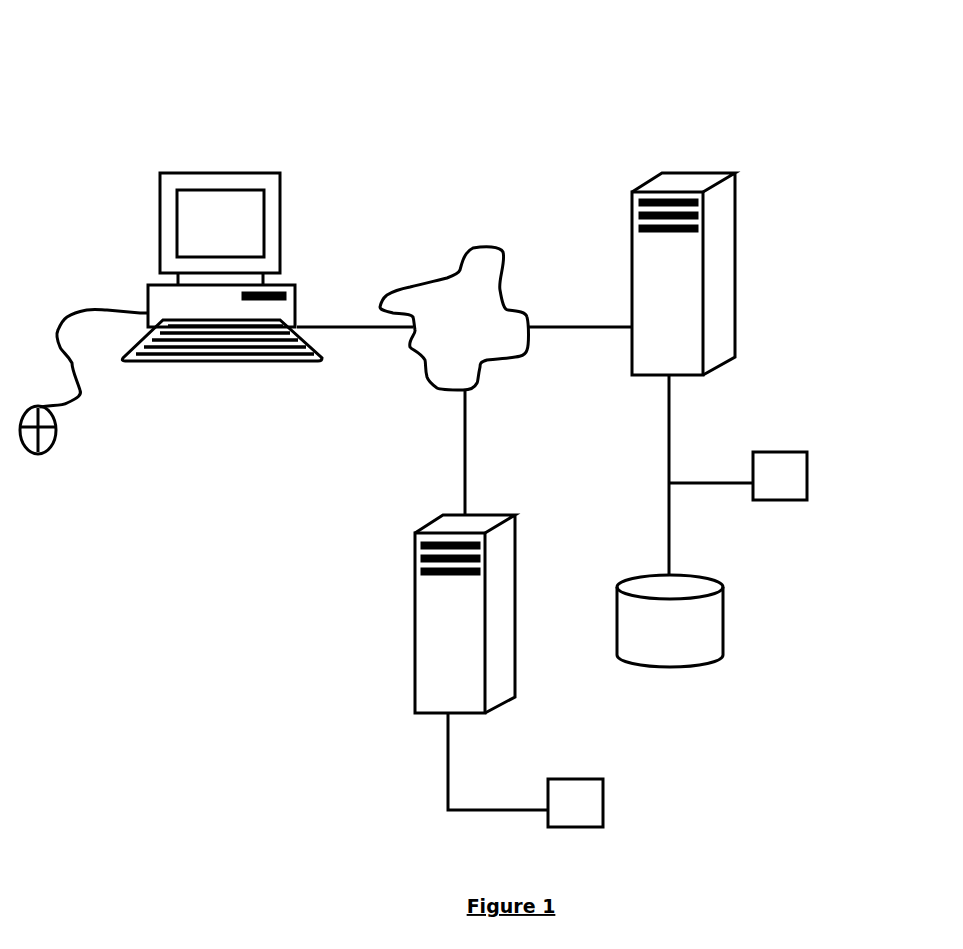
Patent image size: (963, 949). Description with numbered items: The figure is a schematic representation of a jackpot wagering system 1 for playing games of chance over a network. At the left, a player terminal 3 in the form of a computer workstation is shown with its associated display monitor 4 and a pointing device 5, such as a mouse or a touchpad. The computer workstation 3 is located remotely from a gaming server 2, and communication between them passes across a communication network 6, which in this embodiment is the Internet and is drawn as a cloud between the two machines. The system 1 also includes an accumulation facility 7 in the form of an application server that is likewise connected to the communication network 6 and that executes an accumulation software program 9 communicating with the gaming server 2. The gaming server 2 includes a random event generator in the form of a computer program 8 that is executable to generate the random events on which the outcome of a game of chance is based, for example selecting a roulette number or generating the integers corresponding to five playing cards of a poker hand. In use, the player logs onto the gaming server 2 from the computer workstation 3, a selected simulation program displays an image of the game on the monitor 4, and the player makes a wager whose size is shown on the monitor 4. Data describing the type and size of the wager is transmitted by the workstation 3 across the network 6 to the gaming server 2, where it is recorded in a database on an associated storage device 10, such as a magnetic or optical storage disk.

The jackpot wagering system 1 is at (447, 125).
The gaming server 2 is at (740, 263).
The player terminal 3 is at (205, 361).
The display monitor 4 is at (208, 172).
The pointing device 5 is at (57, 438).
The communication network 6 is at (470, 250).
The accumulation facility 7 is at (498, 673).
The random event generation program 8 is at (807, 483).
The accumulation software program 9 is at (603, 810).
The storage device 10 is at (723, 608).